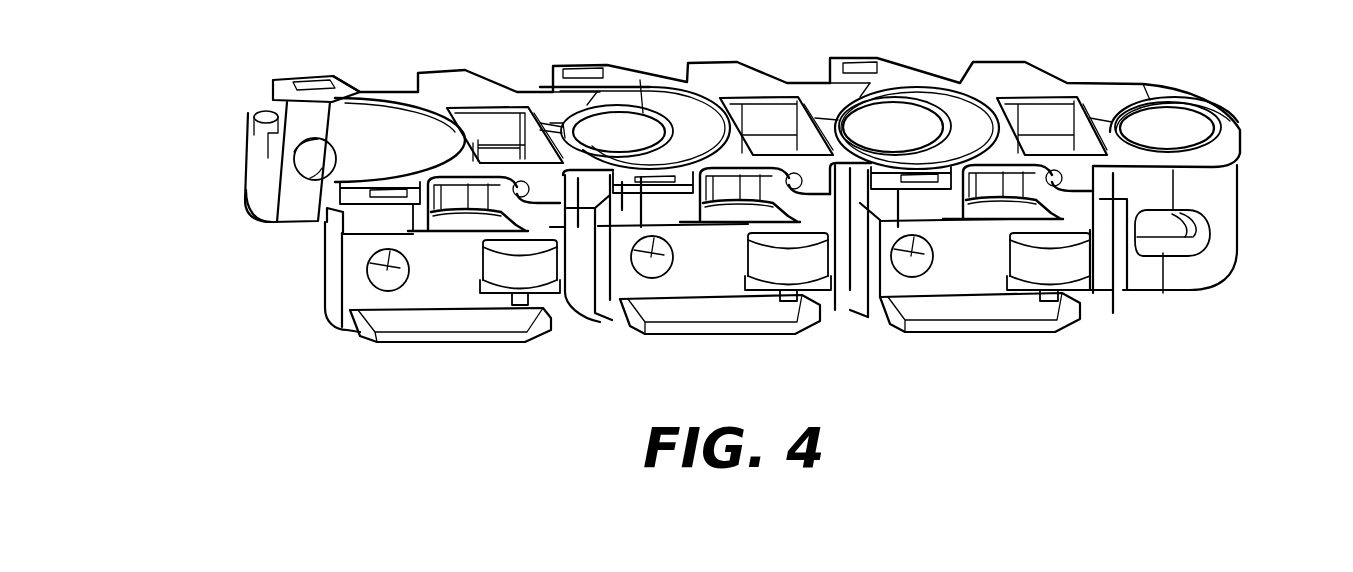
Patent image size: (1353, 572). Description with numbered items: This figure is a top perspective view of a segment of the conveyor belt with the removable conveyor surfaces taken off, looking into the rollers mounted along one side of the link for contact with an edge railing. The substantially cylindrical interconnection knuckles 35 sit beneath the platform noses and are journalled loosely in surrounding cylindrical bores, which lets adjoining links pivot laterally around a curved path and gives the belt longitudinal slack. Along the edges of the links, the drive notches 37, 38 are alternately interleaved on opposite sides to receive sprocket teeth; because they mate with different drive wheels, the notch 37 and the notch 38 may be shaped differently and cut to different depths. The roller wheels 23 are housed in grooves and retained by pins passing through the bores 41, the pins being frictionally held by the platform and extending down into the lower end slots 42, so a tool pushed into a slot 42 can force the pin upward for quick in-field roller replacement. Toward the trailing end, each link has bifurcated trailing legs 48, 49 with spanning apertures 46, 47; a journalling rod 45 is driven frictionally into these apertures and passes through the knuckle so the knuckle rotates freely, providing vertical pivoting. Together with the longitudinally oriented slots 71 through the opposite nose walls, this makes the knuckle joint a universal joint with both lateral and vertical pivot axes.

The roller wheel 23 is at (1060, 258).
The interconnection knuckle 35 is at (637, 133).
The drive notch 37 is at (381, 92).
The drive notch 38 is at (468, 213).
The bore 41 is at (1058, 181).
The lower end slot 42 is at (1046, 300).
The journalling rod 45 is at (1170, 220).
The spanning aperture 46 is at (302, 184).
The spanning aperture 47 is at (367, 276).
The bifurcated trailing leg 48 is at (267, 155).
The bifurcated trailing leg 49 is at (357, 340).
The longitudinally oriented slot 71 is at (1196, 243).